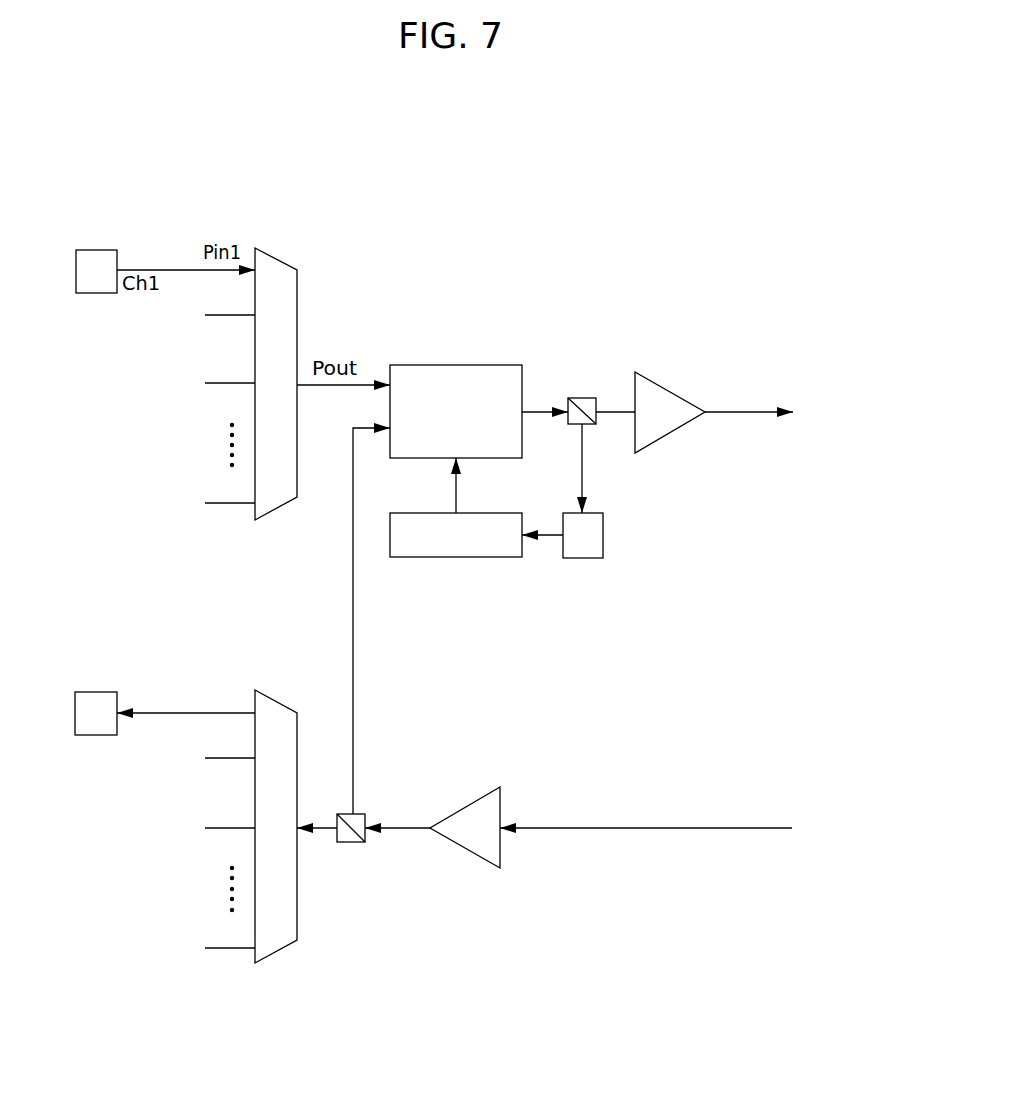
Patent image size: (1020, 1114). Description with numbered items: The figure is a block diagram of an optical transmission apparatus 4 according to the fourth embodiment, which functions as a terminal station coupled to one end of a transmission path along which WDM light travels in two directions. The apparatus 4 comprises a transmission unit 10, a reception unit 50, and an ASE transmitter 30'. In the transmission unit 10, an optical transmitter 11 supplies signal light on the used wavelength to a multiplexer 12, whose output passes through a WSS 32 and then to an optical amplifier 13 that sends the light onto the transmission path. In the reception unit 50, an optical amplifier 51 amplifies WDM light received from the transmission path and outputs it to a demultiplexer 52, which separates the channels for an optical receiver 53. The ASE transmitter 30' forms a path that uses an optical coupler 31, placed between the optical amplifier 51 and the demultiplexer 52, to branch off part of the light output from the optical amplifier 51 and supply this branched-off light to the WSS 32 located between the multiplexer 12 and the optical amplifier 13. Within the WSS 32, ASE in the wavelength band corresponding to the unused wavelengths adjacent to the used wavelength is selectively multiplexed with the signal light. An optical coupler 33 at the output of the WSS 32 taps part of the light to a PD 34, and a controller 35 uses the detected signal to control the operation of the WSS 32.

The optical transmission apparatus 4 is at (724, 170).
The transmission unit 10 is at (724, 541).
The optical transmitter 11 is at (93, 250).
The multiplexer 12 is at (277, 256).
The optical amplifier 13 is at (660, 383).
The ASE transmitter 30' is at (553, 244).
The optical coupler 31 is at (351, 842).
The WSS 32 is at (449, 365).
The optical coupler 33 is at (580, 398).
The PD 34 is at (580, 558).
The controller 35 is at (440, 557).
The reception unit 50 is at (436, 981).
The optical amplifier 51 is at (470, 803).
The demultiplexer 52 is at (275, 698).
The optical receiver 53 is at (93, 692).